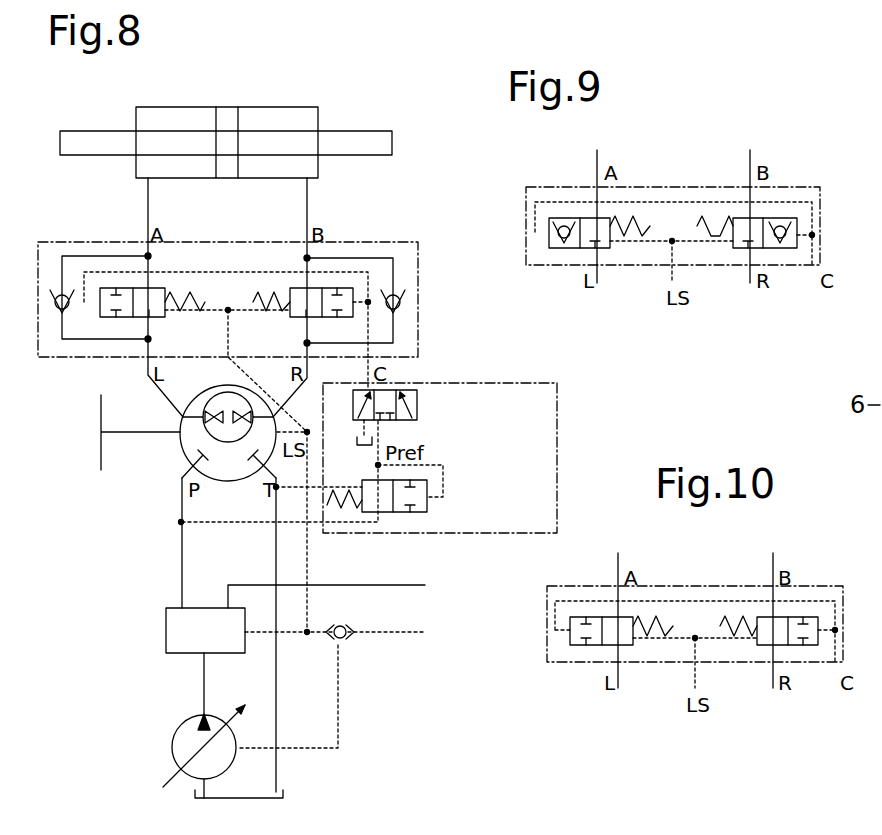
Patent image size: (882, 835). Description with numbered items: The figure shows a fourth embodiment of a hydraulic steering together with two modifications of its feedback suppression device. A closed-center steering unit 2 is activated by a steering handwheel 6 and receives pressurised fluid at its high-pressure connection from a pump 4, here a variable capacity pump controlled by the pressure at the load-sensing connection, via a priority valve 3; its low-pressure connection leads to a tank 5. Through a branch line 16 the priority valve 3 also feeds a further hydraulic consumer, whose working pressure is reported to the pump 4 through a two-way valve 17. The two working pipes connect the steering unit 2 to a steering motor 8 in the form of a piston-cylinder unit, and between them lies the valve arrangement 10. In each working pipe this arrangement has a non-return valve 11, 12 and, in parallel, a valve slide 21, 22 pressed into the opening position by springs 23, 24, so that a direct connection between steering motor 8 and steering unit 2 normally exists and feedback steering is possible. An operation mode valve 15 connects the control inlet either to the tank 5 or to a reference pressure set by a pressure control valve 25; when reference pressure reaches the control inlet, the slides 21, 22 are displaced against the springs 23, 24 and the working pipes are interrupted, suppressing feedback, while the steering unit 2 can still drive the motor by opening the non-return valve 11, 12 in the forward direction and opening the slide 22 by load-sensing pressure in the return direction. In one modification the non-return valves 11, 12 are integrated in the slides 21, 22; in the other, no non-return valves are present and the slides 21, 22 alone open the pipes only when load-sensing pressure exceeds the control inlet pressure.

In FIG. 8, the steering unit 2 is at (183, 450).
In FIG. 8, the priority valve 3 is at (173, 640).
In FIG. 8, the pump 4 is at (178, 750).
In FIG. 8, the tank 5 is at (244, 800).
In FIG. 8, the steering handwheel 6 is at (100, 416).
In FIG. 8, the steering motor 8 is at (271, 110).
In FIG. 8, the valve arrangement 10 is at (405, 242).
In FIG. 9, the valve arrangement 10 is at (812, 187).
In FIG. 10, the valve arrangement 10 is at (825, 586).
In FIG. 8, the non-return valve 11 is at (61, 345).
In FIG. 9, the non-return valve 11 is at (553, 245).
In FIG. 8, the non-return valve 12 is at (402, 308).
In FIG. 9, the non-return valve 12 is at (798, 232).
In FIG. 8, the operation mode valve 15 is at (419, 405).
In FIG. 8, the branch line 16 is at (388, 588).
In FIG. 8, the two-way valve 17 is at (347, 641).
In FIG. 8, the valve slide 21 is at (157, 288).
In FIG. 9, the valve slide 21 is at (607, 249).
In FIG. 10, the valve slide 21 is at (627, 617).
In FIG. 8, the valve slide 22 is at (295, 288).
In FIG. 9, the valve slide 22 is at (740, 249).
In FIG. 10, the valve slide 22 is at (762, 617).
In FIG. 8, the spring 23 is at (195, 288).
In FIG. 9, the spring 23 is at (638, 216).
In FIG. 10, the spring 23 is at (670, 617).
In FIG. 8, the spring 24 is at (263, 288).
In FIG. 9, the spring 24 is at (700, 216).
In FIG. 10, the spring 24 is at (735, 640).
In FIG. 8, the pressure control valve 25 is at (430, 514).